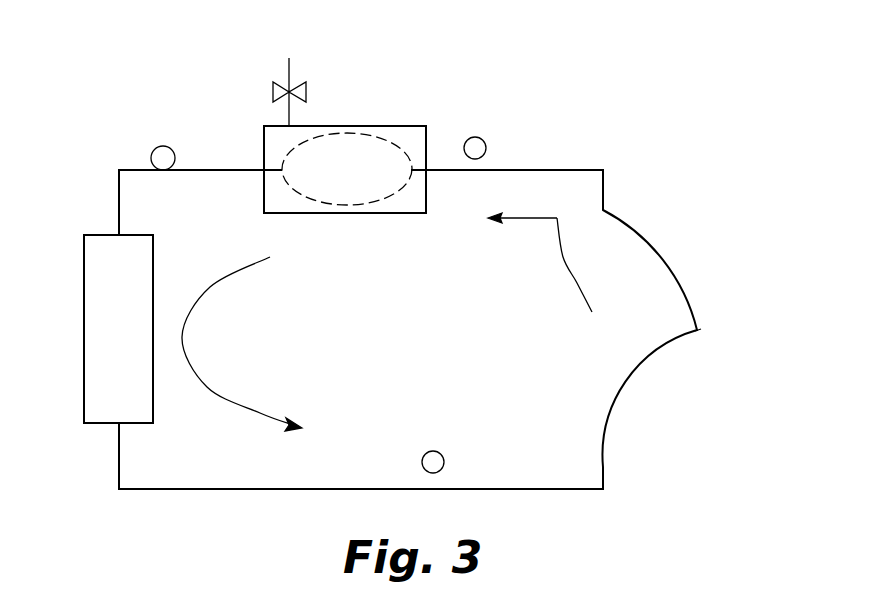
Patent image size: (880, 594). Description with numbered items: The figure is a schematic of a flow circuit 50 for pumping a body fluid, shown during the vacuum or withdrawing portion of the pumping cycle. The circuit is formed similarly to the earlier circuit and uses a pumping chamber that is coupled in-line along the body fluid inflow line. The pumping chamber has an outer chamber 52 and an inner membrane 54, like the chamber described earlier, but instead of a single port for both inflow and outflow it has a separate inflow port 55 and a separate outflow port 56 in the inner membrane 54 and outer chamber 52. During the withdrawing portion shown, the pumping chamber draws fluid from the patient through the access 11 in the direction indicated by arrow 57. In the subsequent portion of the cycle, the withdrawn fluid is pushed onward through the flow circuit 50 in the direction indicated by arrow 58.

The flow circuit 50 is at (698, 165).
The access 11 is at (699, 330).
The outer chamber 52 is at (398, 126).
The inner membrane 54 is at (330, 134).
The inflow port 55 is at (427, 155).
The outflow port 56 is at (280, 169).
The arrow 57 is at (562, 257).
The arrow 58 is at (220, 395).